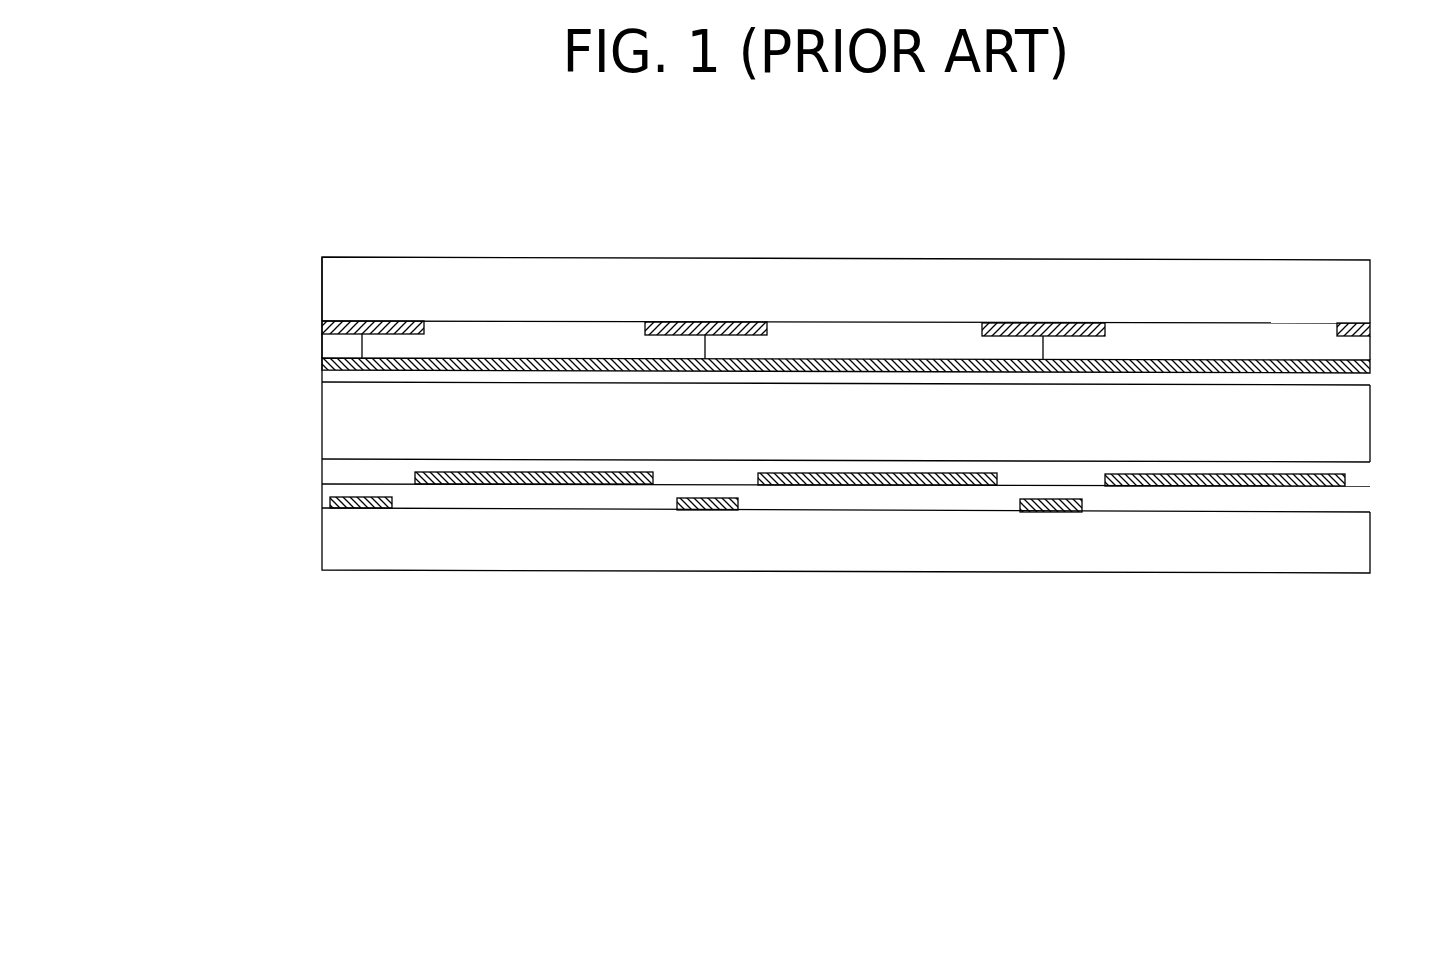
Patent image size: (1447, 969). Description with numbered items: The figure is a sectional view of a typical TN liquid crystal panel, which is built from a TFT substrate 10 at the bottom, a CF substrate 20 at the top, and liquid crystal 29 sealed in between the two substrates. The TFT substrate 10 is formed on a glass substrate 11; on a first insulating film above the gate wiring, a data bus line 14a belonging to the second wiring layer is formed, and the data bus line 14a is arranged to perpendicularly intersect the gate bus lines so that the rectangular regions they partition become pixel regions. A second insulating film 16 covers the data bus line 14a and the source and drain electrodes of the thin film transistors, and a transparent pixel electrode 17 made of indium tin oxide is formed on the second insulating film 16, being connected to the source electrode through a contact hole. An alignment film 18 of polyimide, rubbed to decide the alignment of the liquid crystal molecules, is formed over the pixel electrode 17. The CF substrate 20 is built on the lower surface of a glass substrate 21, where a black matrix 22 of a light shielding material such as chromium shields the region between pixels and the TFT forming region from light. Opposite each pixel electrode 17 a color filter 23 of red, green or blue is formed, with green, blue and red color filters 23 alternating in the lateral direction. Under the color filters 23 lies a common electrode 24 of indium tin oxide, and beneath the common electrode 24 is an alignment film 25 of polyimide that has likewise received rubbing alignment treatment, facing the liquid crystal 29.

The TFT substrate 10 is at (284, 455).
The glass substrate 11 is at (1295, 556).
The data bus line 14a is at (352, 509).
The second insulating film 16 is at (1350, 500).
The pixel electrode 17 is at (478, 472).
The alignment film 18 is at (1065, 471).
The CF substrate 20 is at (284, 257).
The glass substrate 21 is at (1330, 272).
The black matrix 22 is at (358, 327).
The color filter 23 is at (565, 345).
The common electrode 24 is at (1365, 368).
The alignment film 25 is at (617, 386).
The liquid crystal 29 is at (340, 420).